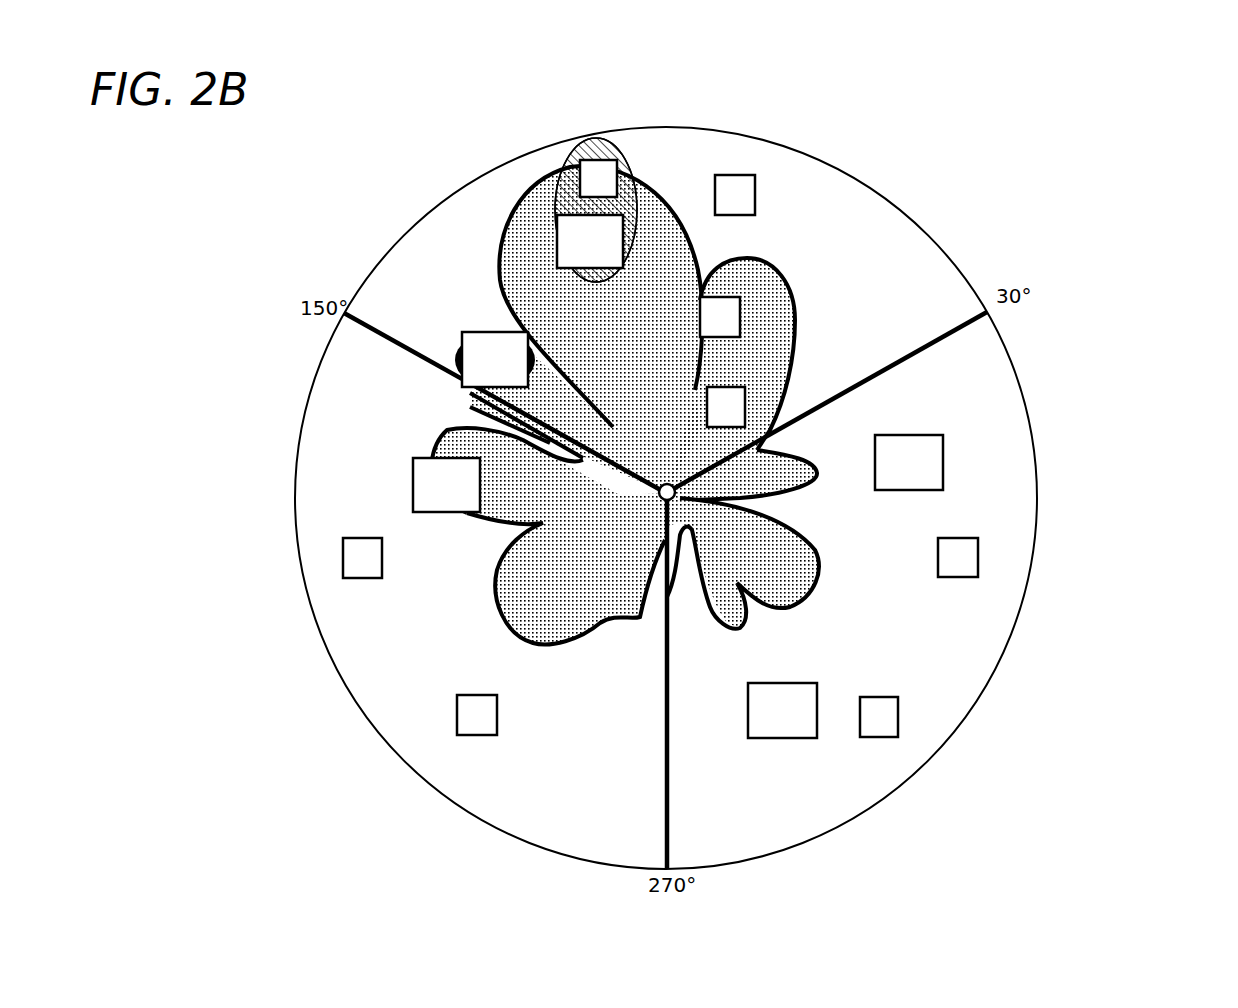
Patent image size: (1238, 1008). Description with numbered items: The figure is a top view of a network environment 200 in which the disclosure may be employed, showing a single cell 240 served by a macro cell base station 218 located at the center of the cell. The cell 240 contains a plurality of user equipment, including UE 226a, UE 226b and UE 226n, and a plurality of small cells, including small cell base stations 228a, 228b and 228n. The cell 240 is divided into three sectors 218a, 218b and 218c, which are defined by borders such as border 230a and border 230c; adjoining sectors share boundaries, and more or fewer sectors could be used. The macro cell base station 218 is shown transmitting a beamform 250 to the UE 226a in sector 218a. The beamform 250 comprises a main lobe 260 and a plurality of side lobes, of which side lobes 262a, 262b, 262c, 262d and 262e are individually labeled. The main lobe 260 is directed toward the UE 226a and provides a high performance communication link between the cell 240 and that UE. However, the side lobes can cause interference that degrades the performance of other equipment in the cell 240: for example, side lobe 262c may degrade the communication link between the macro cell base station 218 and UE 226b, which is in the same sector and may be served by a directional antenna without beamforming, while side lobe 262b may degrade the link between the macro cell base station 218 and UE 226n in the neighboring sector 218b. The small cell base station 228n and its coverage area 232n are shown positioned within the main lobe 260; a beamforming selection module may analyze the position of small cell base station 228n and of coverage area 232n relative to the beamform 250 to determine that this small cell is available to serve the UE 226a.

The network environment 200 is at (1154, 120).
The macro cell base station 218 is at (660, 493).
The sector 218a is at (691, 167).
The sector 218b is at (586, 796).
The sector 218c is at (796, 796).
The UE 226a is at (642, 252).
The UE 226b is at (500, 330).
The UE 226n is at (504, 497).
The small cell base station 228a is at (778, 197).
The small cell base station 228b is at (762, 317).
The small cell base station 228n is at (588, 142).
The border 230a is at (397, 345).
The border 230c is at (946, 333).
The coverage area 232n is at (560, 168).
The cell 240 is at (1026, 402).
The beamform 250 is at (668, 446).
The main lobe 260 is at (494, 211).
The side lobe 262a is at (587, 648).
The side lobe 262b is at (430, 443).
The side lobe 262c is at (468, 406).
The side lobe 262d is at (800, 326).
The side lobe 262e is at (826, 588).